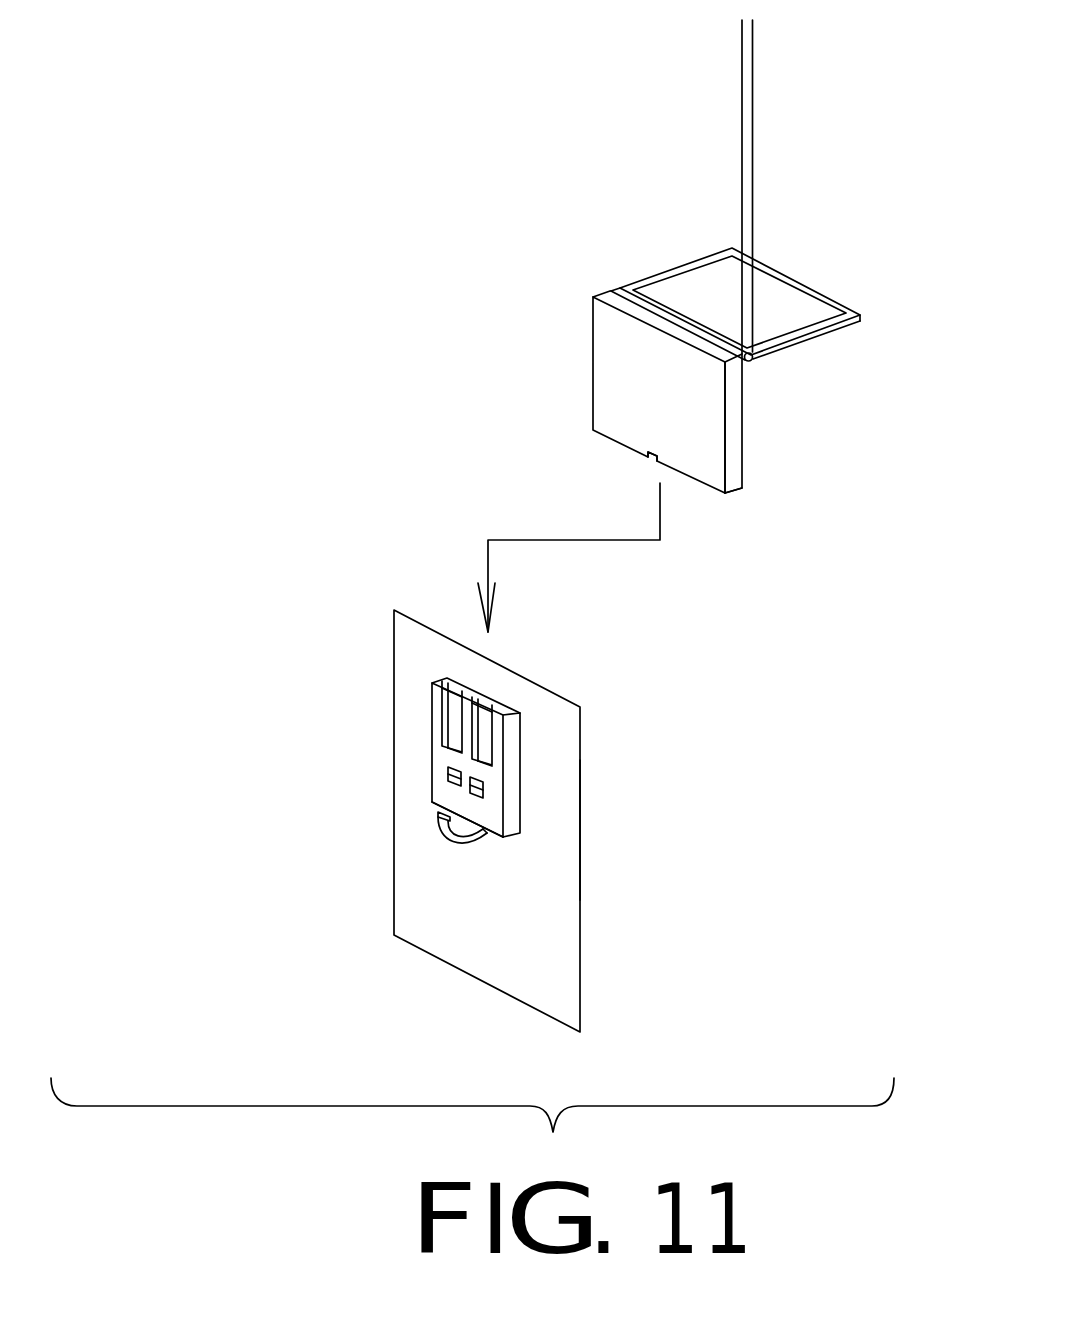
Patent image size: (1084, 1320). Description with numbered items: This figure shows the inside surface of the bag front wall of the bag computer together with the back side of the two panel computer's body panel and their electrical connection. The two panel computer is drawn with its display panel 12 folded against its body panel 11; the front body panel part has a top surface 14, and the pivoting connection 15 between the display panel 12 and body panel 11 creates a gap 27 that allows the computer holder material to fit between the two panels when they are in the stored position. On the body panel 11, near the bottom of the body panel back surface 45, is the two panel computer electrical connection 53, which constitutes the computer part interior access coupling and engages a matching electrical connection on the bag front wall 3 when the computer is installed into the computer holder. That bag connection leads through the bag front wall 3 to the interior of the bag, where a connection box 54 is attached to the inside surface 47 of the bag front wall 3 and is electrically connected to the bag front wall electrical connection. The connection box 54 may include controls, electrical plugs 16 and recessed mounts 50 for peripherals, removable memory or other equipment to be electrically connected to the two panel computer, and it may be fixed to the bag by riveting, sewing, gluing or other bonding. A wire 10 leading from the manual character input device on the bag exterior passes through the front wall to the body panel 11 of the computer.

The gap 27 is at (652, 58).
The top surface 14 is at (599, 292).
The display panel 12 is at (687, 248).
The pivoting connection 15 is at (752, 359).
The body panel back surface 45 is at (700, 422).
The body panel 11 is at (733, 493).
The two panel computer electrical connection 53 is at (653, 455).
The recessed mounts 50 is at (455, 705).
The electrical plugs 16 is at (447, 778).
The connection box 54 is at (440, 792).
The inside surface 47 is at (533, 863).
The bag front wall 3 is at (587, 885).
The wire 10 is at (450, 853).